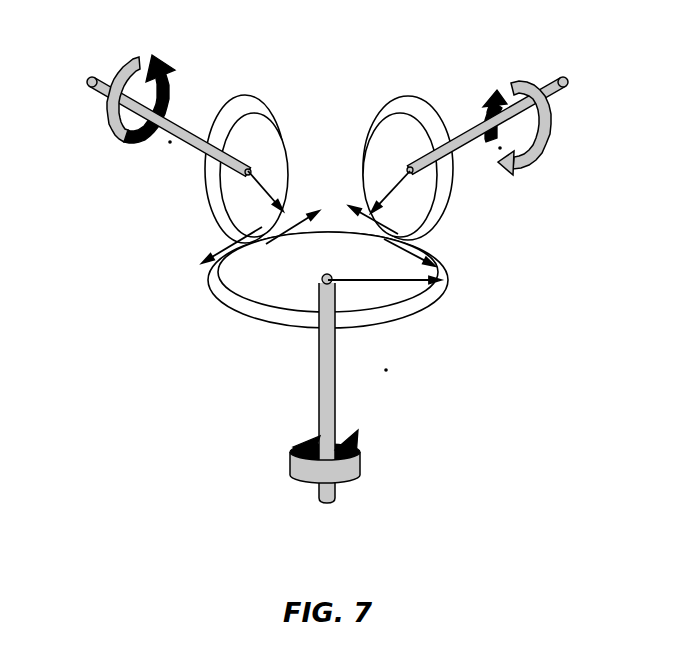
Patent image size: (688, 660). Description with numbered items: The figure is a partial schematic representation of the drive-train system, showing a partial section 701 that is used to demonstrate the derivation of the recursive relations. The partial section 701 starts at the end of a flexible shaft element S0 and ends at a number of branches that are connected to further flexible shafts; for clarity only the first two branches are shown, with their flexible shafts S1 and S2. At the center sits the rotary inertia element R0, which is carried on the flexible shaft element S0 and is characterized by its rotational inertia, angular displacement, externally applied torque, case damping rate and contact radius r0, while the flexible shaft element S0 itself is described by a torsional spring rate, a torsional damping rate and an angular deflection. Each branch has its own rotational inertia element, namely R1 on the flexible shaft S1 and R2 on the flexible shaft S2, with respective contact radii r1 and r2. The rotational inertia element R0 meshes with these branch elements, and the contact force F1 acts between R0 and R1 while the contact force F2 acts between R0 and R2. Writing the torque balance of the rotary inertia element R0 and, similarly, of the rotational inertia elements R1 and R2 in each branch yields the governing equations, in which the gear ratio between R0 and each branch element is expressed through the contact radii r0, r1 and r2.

The partial section 701 is at (328, 293).
The rotary inertia element R0 is at (328, 280).
The rotational inertia element in first branch R1 is at (408, 168).
The rotational inertia element in second branch R2 is at (246, 169).
The flexible shaft element S0 is at (324, 408).
The flexible shaft S1 is at (518, 120).
The flexible shaft S2 is at (139, 111).
The contact radius r0 is at (384, 294).
The contact radius r1 is at (390, 186).
The contact radius r2 is at (267, 185).
The contact force F1 is at (402, 222).
The contact force F2 is at (249, 224).